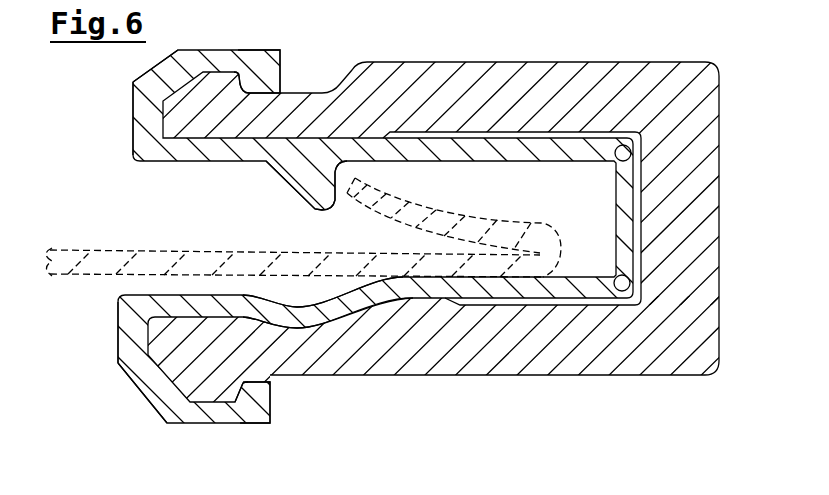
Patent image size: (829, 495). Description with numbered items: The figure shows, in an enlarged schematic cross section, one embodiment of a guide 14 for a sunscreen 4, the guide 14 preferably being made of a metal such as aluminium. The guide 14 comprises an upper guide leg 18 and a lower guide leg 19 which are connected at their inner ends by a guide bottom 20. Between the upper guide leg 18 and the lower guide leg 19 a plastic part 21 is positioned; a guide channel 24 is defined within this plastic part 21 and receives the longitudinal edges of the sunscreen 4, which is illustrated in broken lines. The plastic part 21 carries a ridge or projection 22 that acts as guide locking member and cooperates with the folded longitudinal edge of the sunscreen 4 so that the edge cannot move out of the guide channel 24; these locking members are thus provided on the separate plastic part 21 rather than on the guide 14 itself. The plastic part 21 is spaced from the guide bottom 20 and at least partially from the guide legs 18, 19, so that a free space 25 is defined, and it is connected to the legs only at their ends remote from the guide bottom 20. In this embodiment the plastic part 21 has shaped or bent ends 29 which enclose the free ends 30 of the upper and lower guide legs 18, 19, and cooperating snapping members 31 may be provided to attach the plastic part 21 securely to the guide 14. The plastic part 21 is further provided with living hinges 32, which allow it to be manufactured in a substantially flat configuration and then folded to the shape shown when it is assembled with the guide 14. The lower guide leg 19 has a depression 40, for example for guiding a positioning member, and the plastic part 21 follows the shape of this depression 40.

The sunscreen 4 is at (158, 262).
The guide 14 is at (623, 60).
The upper guide leg 18 is at (543, 80).
The lower guide leg 19 is at (543, 363).
The guide bottom 20 is at (698, 207).
The plastic part 21 is at (614, 193).
The ridge or projection 22 is at (310, 203).
The guide channel 24 is at (454, 226).
The free space 25 is at (640, 292).
The shaped or bent ends 29 is at (147, 110).
The free ends 30 is at (219, 88).
The snapping members 31 is at (254, 84).
The living hinges 32 is at (633, 146).
The depression 40 is at (305, 328).